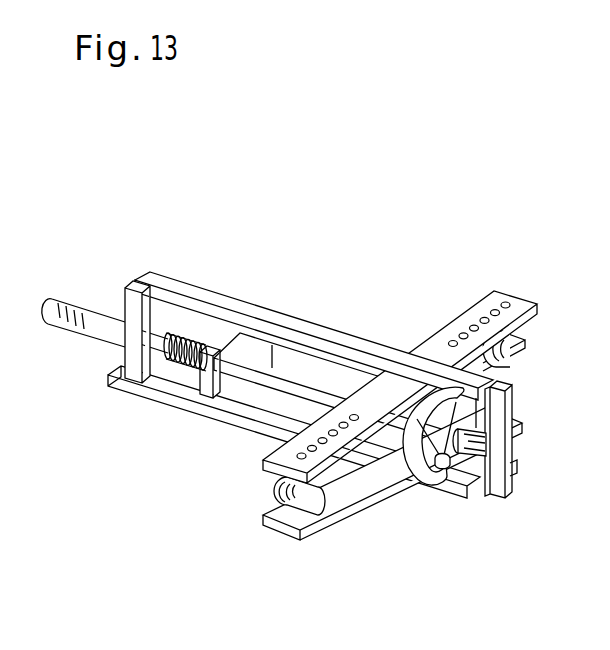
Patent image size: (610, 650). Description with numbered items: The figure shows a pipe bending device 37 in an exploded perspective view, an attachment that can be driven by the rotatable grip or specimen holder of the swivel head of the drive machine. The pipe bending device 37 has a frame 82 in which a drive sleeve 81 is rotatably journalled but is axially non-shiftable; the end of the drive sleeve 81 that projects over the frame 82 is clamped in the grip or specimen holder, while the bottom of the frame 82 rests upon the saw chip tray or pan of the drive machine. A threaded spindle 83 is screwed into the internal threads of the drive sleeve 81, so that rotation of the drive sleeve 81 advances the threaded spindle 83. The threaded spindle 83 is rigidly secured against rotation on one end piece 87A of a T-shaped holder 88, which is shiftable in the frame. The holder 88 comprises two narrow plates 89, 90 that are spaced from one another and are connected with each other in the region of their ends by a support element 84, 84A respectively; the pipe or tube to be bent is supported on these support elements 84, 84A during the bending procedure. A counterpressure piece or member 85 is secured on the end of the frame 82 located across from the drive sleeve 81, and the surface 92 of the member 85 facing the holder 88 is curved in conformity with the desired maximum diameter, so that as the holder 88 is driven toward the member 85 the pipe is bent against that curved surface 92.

The pipe bending device 37 is at (258, 300).
The drive sleeve 81 is at (68, 328).
The frame 82 is at (135, 370).
The threaded spindle 83 is at (183, 360).
The support element 84 is at (275, 492).
The support element 84A is at (492, 342).
The counterpressure piece 85 is at (408, 475).
The end piece 87A is at (204, 386).
The T-shaped holder 88 is at (421, 363).
The narrow plate 89 is at (515, 300).
The narrow plate 90 is at (334, 482).
The surface 92 is at (412, 462).